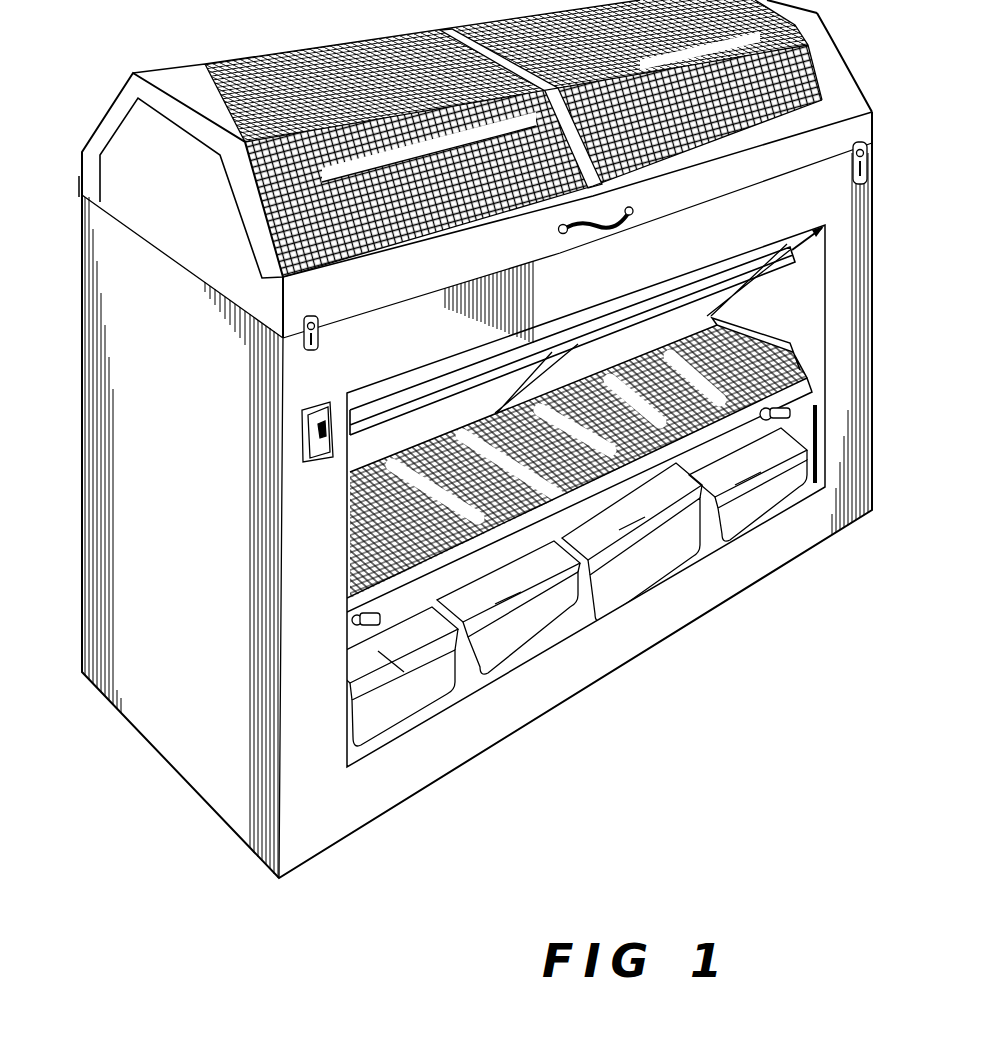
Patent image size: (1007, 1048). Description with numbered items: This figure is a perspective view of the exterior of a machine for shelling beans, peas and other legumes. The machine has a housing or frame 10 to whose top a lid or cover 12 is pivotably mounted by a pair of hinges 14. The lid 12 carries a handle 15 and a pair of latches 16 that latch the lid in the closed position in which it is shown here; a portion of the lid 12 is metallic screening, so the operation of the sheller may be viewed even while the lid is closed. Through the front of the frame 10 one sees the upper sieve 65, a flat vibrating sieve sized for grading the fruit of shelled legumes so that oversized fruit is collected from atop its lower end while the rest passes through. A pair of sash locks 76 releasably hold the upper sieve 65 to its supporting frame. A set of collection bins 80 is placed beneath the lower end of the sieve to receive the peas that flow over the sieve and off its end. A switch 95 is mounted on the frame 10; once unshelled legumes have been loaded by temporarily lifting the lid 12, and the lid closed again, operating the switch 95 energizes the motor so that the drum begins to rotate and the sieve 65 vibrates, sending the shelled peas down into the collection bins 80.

The housing or frame 10 is at (108, 521).
The lid or cover 12 is at (177, 74).
The hinges 14 is at (82, 188).
The handle 15 is at (613, 233).
The latches 16 is at (318, 340).
The upper sieve 65 is at (600, 405).
The sash locks 76 is at (350, 618).
The collection bins 80 is at (421, 700).
The switch 95 is at (318, 461).